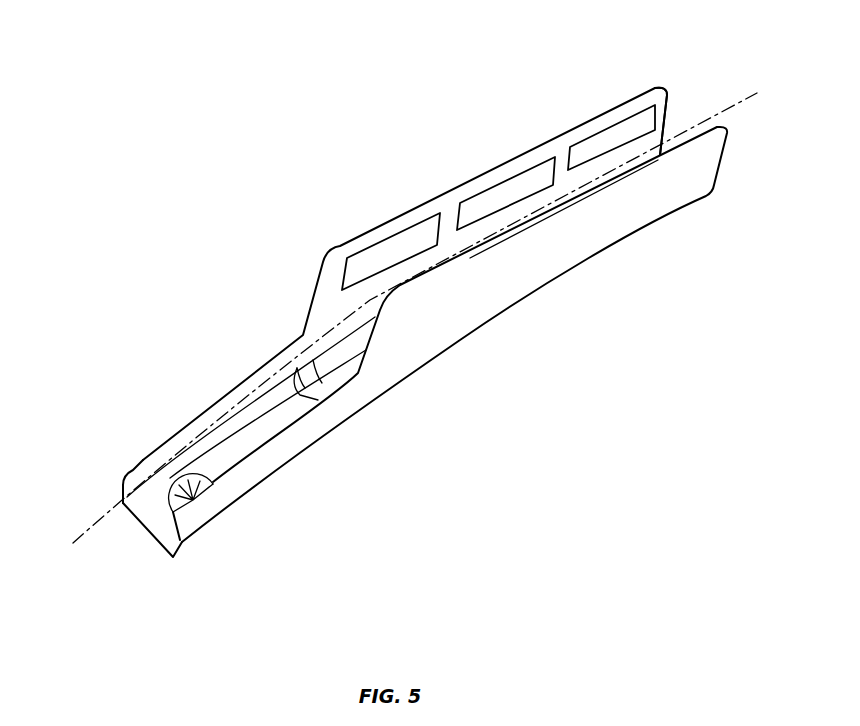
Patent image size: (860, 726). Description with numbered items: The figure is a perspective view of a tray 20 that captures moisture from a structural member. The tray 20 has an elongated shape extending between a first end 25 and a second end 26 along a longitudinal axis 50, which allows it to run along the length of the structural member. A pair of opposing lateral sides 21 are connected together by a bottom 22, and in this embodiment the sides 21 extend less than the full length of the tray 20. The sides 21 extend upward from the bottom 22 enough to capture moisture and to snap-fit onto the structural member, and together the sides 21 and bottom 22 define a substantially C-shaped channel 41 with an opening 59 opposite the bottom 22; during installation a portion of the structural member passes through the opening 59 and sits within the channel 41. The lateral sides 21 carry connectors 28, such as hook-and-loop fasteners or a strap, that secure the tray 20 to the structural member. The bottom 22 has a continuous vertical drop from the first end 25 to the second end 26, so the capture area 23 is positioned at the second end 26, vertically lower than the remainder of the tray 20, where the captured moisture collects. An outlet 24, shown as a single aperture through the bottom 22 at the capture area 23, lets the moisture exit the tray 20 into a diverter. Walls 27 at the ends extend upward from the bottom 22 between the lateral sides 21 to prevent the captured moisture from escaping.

The tray 20 is at (390, 187).
The lateral sides 21 is at (550, 143).
The bottom 22 is at (270, 422).
The capture area 23 is at (193, 463).
The outlet 24 is at (203, 490).
The first end 25 is at (670, 122).
The second end 26 is at (127, 492).
The walls 27 is at (160, 533).
The connectors 28 is at (507, 190).
The C-shaped channel 41 is at (537, 197).
The longitudinal axis 50 is at (762, 95).
The opening 59 is at (400, 268).